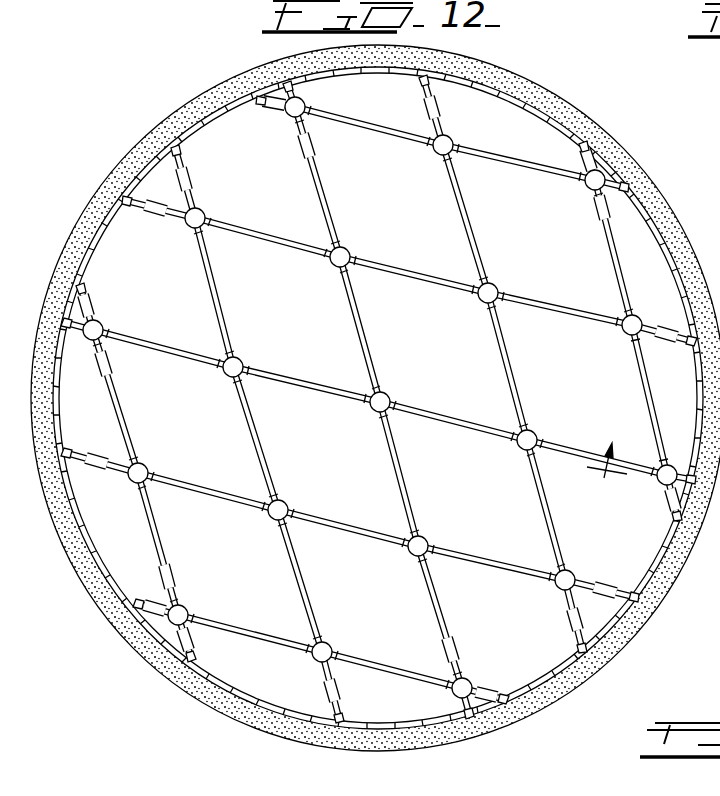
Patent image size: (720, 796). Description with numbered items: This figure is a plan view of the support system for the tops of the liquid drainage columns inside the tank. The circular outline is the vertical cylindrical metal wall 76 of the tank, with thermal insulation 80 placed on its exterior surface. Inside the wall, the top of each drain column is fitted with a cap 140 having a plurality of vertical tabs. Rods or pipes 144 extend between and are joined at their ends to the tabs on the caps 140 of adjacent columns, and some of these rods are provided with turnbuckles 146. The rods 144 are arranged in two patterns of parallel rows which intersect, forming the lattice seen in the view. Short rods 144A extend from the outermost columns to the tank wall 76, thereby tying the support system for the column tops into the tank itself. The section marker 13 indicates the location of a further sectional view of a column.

The section line 13 is at (607, 471).
The vertical cylindrical circular metal wall 76 is at (384, 722).
The thermal insulation 80 is at (475, 733).
The cap 140 is at (284, 502).
The rods or pipes 144 is at (390, 135).
The short rods 144A is at (183, 155).
The turnbuckles 146 is at (550, 172).